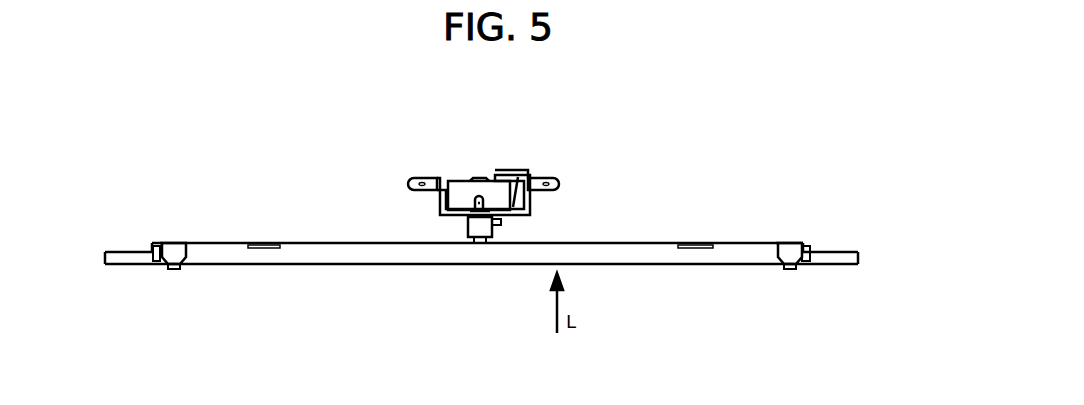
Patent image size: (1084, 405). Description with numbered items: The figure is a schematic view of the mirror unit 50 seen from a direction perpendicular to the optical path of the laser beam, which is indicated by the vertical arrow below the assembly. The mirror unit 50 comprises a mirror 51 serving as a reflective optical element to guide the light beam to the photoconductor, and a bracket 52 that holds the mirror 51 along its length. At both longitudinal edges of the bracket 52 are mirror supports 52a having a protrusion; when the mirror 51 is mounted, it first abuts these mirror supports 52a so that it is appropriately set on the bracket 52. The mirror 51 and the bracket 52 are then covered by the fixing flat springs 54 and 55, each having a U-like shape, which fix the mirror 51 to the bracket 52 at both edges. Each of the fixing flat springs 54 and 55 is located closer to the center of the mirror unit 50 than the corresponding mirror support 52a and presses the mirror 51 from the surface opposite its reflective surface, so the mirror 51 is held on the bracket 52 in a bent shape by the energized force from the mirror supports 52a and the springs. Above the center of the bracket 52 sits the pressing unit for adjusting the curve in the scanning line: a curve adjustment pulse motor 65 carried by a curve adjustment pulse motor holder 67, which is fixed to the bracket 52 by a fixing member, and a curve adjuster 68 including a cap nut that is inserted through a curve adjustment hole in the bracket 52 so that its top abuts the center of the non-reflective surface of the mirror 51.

The mirror unit 50 is at (613, 132).
The mirror 51 is at (859, 259).
The bracket 52 is at (315, 252).
The mirror supports 52a is at (150, 250).
The fixing flat spring 54 is at (170, 247).
The fixing flat spring 55 is at (790, 247).
The curve adjustment pulse motor 65 is at (460, 184).
The curve adjustment pulse motor holder 67 is at (428, 176).
The curve adjuster 68 is at (478, 246).